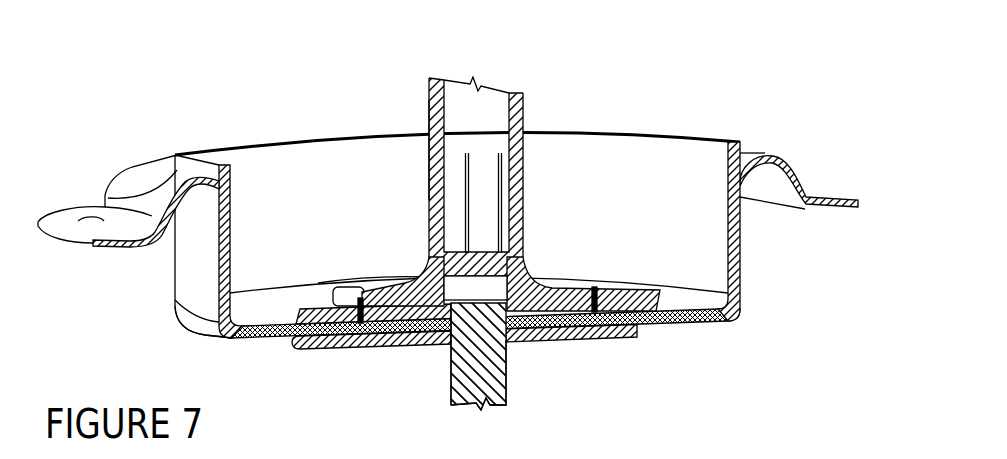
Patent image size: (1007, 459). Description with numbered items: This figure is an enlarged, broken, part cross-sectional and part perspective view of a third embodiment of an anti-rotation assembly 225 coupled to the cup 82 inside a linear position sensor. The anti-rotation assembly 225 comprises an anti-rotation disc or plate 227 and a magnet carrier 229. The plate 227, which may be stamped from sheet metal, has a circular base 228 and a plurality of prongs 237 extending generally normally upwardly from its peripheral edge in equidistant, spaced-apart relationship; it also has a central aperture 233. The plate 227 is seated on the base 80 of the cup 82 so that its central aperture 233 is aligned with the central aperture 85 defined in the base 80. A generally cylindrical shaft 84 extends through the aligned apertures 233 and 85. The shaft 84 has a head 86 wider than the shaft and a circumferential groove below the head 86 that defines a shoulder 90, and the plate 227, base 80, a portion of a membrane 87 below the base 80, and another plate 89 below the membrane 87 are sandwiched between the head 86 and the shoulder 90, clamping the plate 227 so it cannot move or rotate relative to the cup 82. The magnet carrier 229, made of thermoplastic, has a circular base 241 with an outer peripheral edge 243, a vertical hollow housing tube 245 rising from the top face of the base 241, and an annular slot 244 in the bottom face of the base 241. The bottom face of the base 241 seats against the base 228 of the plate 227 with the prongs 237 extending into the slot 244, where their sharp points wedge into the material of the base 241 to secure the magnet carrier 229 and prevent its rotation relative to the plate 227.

The cup 82 is at (661, 131).
The base plate 80 is at (683, 303).
The membrane 87 is at (248, 343).
The circular base 228 is at (600, 337).
The magnet carrier 229 is at (531, 116).
The magnet or housing tube 245 is at (429, 157).
The anti-rotation assembly 225 is at (383, 212).
The circular base 241 is at (381, 285).
The slot 244 is at (383, 290).
The prongs 237 is at (363, 293).
The head 86 is at (527, 270).
The outer circumferentially extending peripheral edge 243 is at (297, 340).
The plate 89 is at (358, 345).
The anti-rotation disc or plate 227 is at (403, 345).
The shoulder 90 is at (443, 342).
The shaft 84 is at (516, 359).
The central aperture 233 is at (484, 306).
The central aperture 85 is at (505, 352).